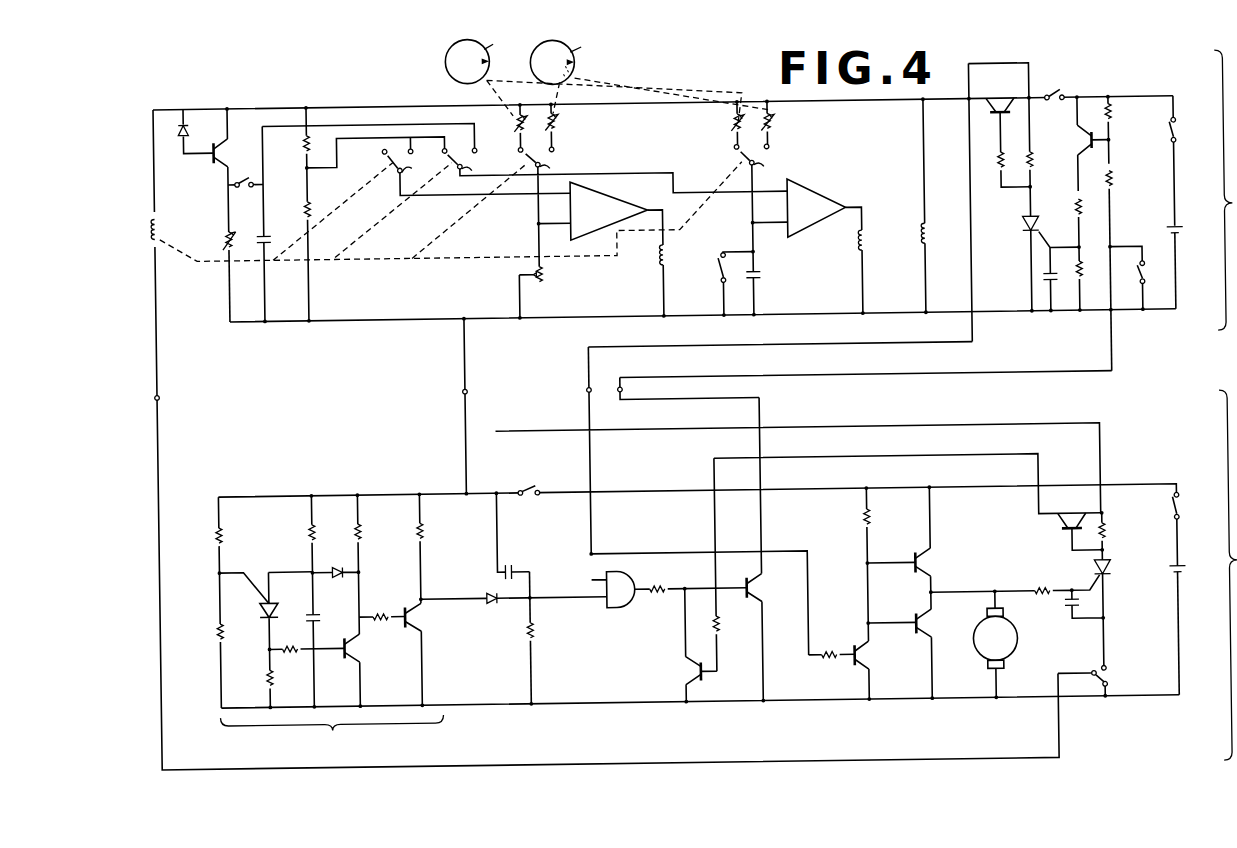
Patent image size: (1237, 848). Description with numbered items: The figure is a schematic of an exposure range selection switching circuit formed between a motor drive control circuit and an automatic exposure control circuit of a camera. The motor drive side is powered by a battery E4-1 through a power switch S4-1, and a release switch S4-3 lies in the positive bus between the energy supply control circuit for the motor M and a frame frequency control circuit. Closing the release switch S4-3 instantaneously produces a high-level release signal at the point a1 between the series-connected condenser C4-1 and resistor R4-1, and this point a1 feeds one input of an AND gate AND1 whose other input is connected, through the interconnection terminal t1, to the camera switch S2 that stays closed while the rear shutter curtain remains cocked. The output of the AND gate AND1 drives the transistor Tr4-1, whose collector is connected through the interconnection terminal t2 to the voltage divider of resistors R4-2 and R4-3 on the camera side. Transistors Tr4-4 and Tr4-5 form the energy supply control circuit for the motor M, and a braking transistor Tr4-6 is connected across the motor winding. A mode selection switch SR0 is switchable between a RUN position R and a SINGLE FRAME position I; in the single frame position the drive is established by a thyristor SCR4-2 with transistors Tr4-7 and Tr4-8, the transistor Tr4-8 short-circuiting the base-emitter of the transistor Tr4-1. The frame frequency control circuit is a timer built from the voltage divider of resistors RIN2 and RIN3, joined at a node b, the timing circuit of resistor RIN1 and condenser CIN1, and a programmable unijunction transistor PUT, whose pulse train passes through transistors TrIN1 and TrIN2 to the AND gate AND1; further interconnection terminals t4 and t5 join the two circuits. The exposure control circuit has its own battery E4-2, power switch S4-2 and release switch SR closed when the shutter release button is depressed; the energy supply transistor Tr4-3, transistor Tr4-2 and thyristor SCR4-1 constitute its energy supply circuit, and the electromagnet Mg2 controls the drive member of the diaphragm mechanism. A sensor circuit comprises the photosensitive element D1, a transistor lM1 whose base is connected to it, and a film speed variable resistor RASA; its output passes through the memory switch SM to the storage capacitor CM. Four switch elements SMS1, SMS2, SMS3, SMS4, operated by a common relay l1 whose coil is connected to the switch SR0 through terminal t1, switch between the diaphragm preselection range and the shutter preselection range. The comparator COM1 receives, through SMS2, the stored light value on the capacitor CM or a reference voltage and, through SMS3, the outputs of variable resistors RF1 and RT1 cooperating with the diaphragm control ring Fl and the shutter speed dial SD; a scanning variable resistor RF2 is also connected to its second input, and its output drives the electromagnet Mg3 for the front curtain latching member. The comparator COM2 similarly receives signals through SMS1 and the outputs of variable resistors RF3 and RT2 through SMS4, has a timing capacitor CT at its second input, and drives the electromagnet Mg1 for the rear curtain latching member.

The photosensitive element D1 is at (196, 131).
The sensor transistor lM1 is at (237, 171).
The memory switch SM is at (245, 192).
The film speed variable resistor RASA is at (217, 277).
The storage capacitor CM is at (274, 223).
The relay l1 is at (164, 229).
The first switch element SMS1 is at (470, 166).
The second switch element SMS2 is at (396, 177).
The third switch element SMS3 is at (547, 167).
The fourth switch element SMS4 is at (765, 165).
The diaphragm value setting variable resistor RF1 is at (511, 126).
The shutter speed setting variable resistor RT1 is at (562, 125).
The scanning variable resistor RF2 is at (544, 270).
The diaphragm value setting variable resistor RF3 is at (728, 123).
The shutter speed setting variable resistor RT2 is at (779, 122).
The comparator COM1 is at (609, 210).
The comparator COM2 is at (816, 207).
The electromagnet Mg1 is at (868, 260).
The electromagnet Mg2 is at (937, 205).
The electromagnet Mg3 is at (670, 262).
The switch S2 is at (892, 192).
The timing capacitor CT is at (763, 268).
The energy supply transistor Tr4-3 is at (1008, 133).
The transistor Tr4-2 is at (1080, 204).
The resistor R4-2 is at (1124, 130).
The resistor R4-3 is at (1126, 270).
The thyristor SCR4-1 is at (1053, 263).
The power switch S4-2 is at (1188, 160).
The battery E4-2 is at (1189, 267).
The release switch SR is at (1137, 278).
The diaphragm control ring Fl is at (481, 61).
The shutter speed dial SD is at (568, 61).
The interconnection terminal t1 is at (596, 377).
The interconnection terminal t2 is at (615, 391).
The terminal t4 is at (474, 405).
The terminal t5 is at (166, 403).
The timing resistor RIN1 is at (327, 534).
The voltage divider resistor RIN2 is at (234, 535).
The voltage divider resistor RIN3 is at (235, 641).
The node b is at (244, 578).
The programmable unijunction transistor PUT is at (286, 640).
The timing condenser CIN1 is at (328, 639).
The transistor TrIN1 is at (332, 671).
The transistor TrIN2 is at (406, 600).
The condenser C4-1 is at (514, 536).
The connection point a1 is at (538, 597).
The resistor R4-1 is at (546, 663).
The release switch S4-3 is at (535, 482).
The AND gate AND1 is at (668, 589).
The transistor Tr4-1 is at (771, 549).
The transistor Tr4-8 is at (686, 580).
The transistor Tr4-4 is at (855, 594).
The transistor Tr4-5 is at (913, 540).
The braking transistor Tr4-6 is at (916, 645).
The transistor Tr4-7 is at (1081, 529).
The motor M is at (983, 644).
The thyristor SCR4-2 is at (1095, 603).
The power switch S4-1 is at (1191, 529).
The battery E4-1 is at (1196, 630).
The SINGLE FRAME position I is at (1106, 661).
The RUN position R is at (1077, 667).
The mode selection switch SR0 is at (1116, 685).